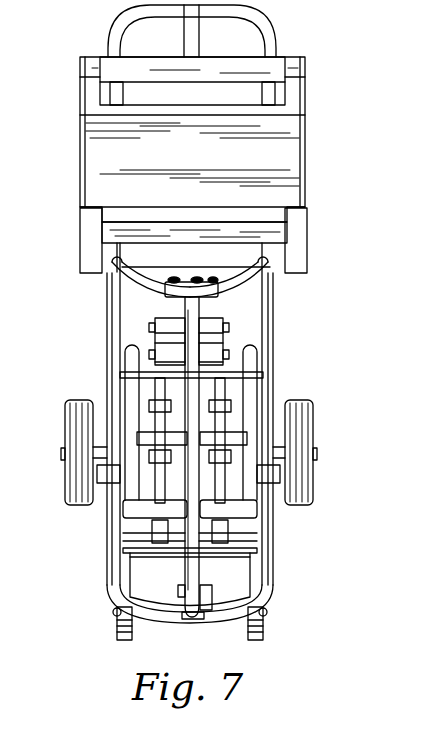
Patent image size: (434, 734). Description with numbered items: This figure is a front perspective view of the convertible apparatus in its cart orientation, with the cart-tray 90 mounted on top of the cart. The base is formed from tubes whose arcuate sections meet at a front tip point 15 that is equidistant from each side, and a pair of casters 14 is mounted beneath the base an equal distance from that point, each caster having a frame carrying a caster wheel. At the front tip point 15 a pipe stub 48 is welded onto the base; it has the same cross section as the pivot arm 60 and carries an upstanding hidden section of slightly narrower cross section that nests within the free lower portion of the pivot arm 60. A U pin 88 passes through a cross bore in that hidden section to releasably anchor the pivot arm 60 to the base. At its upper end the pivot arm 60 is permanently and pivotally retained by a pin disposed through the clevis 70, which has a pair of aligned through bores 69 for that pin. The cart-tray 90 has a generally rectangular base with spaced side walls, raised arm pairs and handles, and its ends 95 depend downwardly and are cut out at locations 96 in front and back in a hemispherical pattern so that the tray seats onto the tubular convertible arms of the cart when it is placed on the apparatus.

The casters 14 is at (115, 622).
The front tip point 15 is at (190, 623).
The pipe stub 48 is at (202, 619).
The pivot arm 60 is at (186, 567).
The aligned through bores 69 is at (165, 297).
The clevis 70 is at (217, 297).
The U pin 88 is at (205, 585).
The cart-tray 90 is at (260, 161).
The ends of cart-tray 95 is at (228, 250).
The cut out locations 96 is at (117, 256).